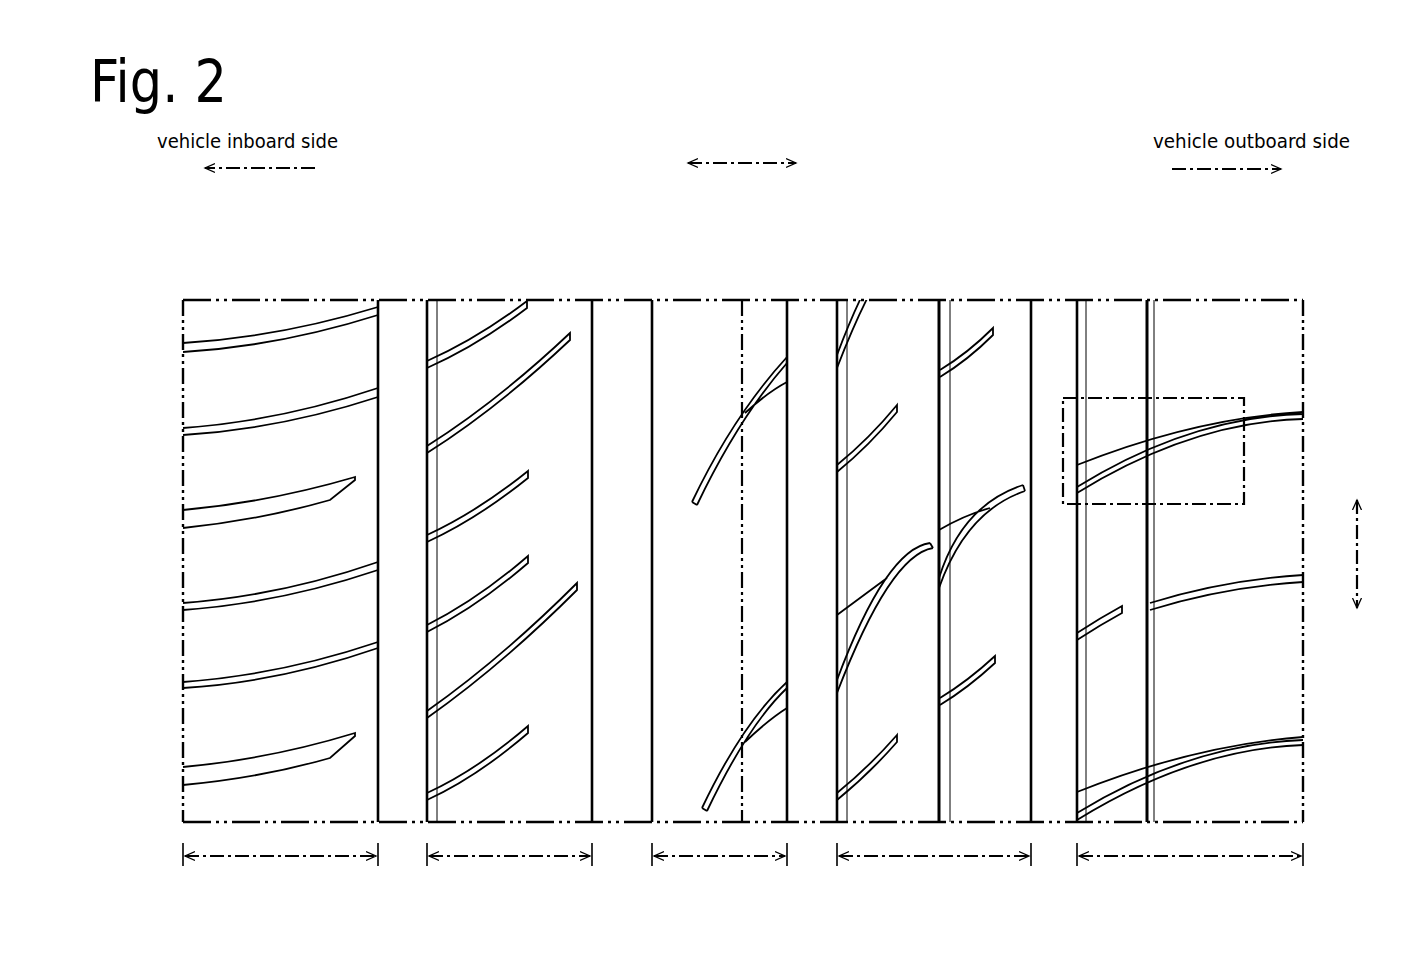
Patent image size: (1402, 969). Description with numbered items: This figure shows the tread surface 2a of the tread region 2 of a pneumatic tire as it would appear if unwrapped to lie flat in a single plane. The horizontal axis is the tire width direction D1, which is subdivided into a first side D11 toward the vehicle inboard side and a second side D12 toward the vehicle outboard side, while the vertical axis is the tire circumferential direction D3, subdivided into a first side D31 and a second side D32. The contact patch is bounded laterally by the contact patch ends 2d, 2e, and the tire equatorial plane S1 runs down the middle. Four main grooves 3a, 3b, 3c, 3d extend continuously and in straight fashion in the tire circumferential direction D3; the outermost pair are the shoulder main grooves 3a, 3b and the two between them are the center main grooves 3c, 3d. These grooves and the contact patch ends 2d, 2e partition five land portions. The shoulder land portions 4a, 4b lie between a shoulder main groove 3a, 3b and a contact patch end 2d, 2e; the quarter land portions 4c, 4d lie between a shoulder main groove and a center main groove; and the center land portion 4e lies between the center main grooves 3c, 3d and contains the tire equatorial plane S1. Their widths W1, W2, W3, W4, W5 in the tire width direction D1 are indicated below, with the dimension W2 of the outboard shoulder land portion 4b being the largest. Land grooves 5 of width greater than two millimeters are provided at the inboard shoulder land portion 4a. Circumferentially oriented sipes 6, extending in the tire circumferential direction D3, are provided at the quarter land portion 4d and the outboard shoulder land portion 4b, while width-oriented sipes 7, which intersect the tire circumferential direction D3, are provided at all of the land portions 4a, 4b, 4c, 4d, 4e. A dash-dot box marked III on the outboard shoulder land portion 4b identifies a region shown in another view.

The tread region 2 is at (1290, 311).
The tread surface 2a is at (1283, 368).
The contact patch end 2d is at (183, 733).
The contact patch end 2e is at (1307, 767).
The shoulder main groove 3a is at (402, 300).
The shoulder main groove 3b is at (1057, 300).
The center main groove 3c is at (620, 300).
The center main groove 3d is at (808, 302).
The shoulder land portion 4a is at (278, 298).
The shoulder land portion 4b is at (1178, 300).
The quarter land portion 4c is at (505, 300).
The quarter land portion 4d is at (917, 300).
The center land portion 4e is at (730, 300).
The land groove 5 is at (222, 527).
The circumferentially oriented sipe 6 is at (945, 745).
The width-oriented sipe 7 is at (222, 608).
The tire equatorial plane S1 is at (742, 318).
The section III is at (1205, 396).
The dimension in the tire width direction W1 is at (280, 873).
The dimension in the tire width direction W2 is at (1190, 873).
The dimension in the tire width direction W3 is at (509, 873).
The dimension in the tire width direction W4 is at (934, 873).
The dimension in the tire width direction W5 is at (719, 873).
The tire width direction D1 is at (742, 148).
The first width direction side D11 is at (232, 168).
The second width direction side D12 is at (1251, 168).
The tire circumferential direction D3 is at (1374, 554).
The first circumferential direction side D31 is at (1362, 483).
The second circumferential direction side D32 is at (1362, 626).